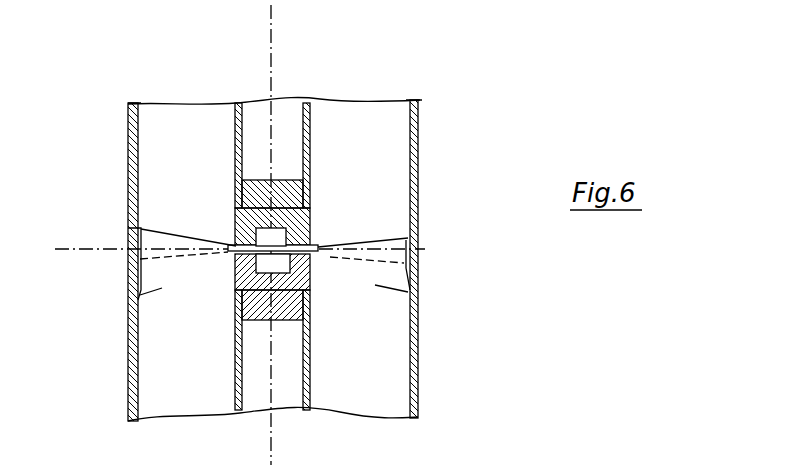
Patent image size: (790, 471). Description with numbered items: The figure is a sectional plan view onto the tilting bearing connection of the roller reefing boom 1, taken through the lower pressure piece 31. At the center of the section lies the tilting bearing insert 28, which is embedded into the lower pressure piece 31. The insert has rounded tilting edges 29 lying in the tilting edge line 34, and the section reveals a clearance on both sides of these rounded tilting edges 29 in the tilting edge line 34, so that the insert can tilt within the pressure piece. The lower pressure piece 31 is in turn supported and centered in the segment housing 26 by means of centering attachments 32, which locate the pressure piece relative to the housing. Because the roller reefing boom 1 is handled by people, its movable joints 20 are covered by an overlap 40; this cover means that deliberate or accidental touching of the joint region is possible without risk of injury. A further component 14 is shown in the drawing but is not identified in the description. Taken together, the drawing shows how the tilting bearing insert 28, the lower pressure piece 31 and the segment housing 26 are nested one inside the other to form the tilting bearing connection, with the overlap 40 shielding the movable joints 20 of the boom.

The roller reefing boom 1 is at (452, 85).
The outer tube (housing) 14 is at (419, 187).
The segment housing 26 is at (412, 127).
The centering attachments 32 is at (240, 205).
The lower pressure piece 31 is at (282, 240).
The rounded tilting edges 29 is at (315, 301).
The tilting edge line 34 is at (260, 240).
The movable joints 20 is at (452, 280).
The tilting bearing insert 28 is at (258, 244).
The overlap 40 is at (418, 276).